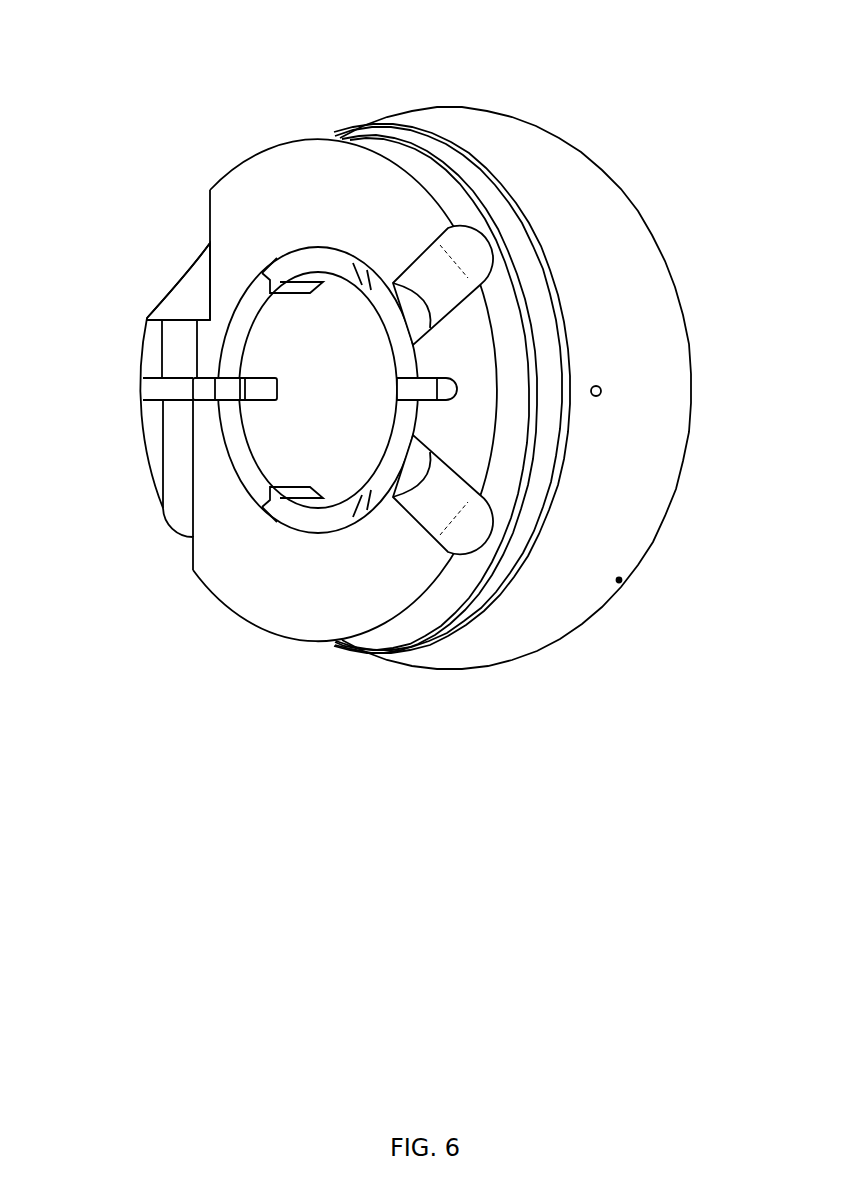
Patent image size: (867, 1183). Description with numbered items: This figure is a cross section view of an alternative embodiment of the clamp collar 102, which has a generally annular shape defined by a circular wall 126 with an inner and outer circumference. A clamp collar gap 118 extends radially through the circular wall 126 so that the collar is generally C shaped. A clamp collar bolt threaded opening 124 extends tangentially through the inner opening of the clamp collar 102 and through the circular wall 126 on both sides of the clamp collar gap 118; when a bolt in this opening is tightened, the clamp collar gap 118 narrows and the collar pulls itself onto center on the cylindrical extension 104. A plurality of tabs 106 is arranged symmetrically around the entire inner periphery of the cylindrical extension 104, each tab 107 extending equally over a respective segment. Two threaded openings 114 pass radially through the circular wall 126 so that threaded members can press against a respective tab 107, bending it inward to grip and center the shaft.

The clamp collar 102 is at (297, 192).
The cylindrical extension 104 is at (358, 404).
The plurality of tabs 106 is at (340, 536).
The tab 107 is at (320, 255).
The threaded opening 114 is at (443, 258).
The clamp collar gap 118 is at (163, 397).
The clamp collar bolt threaded opening 124 is at (183, 337).
The circular wall 126 is at (237, 563).